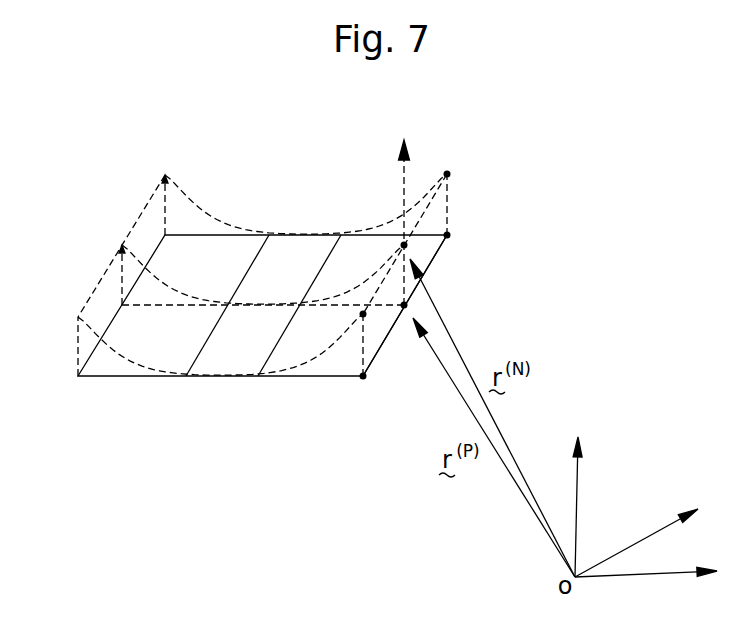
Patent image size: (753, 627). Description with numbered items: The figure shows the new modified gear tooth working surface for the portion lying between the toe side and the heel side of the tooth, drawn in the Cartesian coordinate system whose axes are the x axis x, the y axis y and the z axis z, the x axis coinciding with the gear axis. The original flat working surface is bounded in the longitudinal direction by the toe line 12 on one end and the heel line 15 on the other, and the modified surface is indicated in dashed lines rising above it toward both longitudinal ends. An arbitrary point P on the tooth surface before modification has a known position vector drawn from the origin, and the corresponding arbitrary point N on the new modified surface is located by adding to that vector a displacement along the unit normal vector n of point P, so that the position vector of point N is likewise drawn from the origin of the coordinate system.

The toe line 12 is at (114, 317).
The heel line 15 is at (432, 260).
The arbitrary point on the modified tooth surface N is at (387, 253).
The arbitrary point on the tooth surface before modification P is at (403, 332).
The unit normal vector n is at (415, 151).
The x axis x is at (655, 573).
The y axis y is at (647, 534).
The z axis z is at (578, 493).